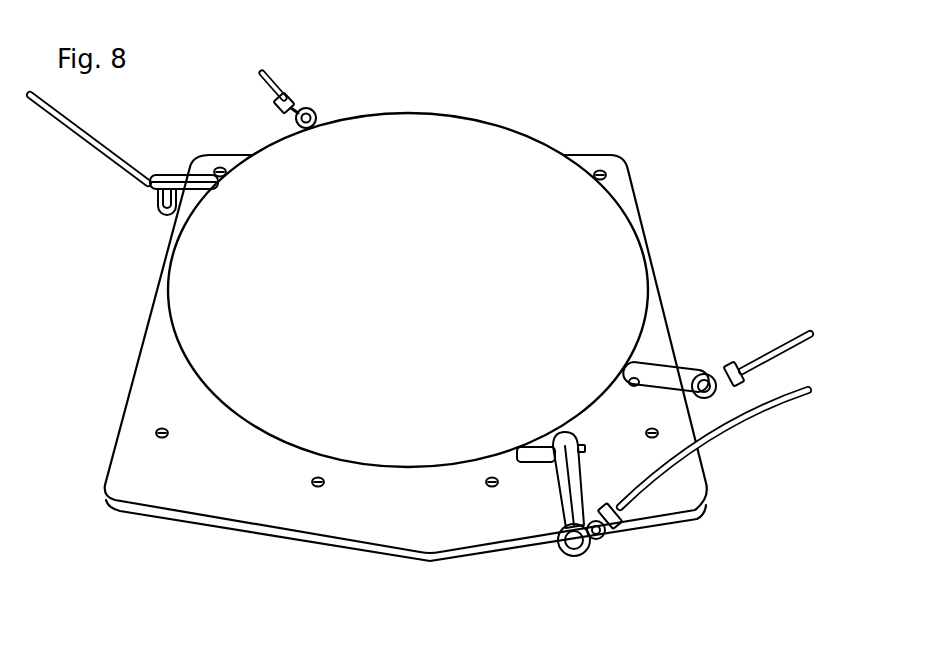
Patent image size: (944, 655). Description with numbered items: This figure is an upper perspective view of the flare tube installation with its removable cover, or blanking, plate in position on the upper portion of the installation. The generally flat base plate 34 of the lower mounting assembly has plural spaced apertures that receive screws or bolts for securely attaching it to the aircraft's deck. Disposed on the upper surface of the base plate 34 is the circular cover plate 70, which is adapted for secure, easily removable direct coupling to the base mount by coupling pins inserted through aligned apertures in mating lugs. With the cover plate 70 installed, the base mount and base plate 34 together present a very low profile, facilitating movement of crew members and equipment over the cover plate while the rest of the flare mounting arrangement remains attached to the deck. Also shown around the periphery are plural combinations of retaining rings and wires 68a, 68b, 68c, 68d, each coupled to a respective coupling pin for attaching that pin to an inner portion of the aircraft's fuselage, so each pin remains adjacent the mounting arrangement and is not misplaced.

The base plate 34 is at (403, 523).
The cover plate 70 is at (248, 338).
The retaining ring and wire combination 68a is at (312, 113).
The retaining ring and wire combination 68b is at (523, 460).
The retaining ring and wire combination 68c is at (187, 178).
The retaining ring and wire combination 68d is at (637, 350).